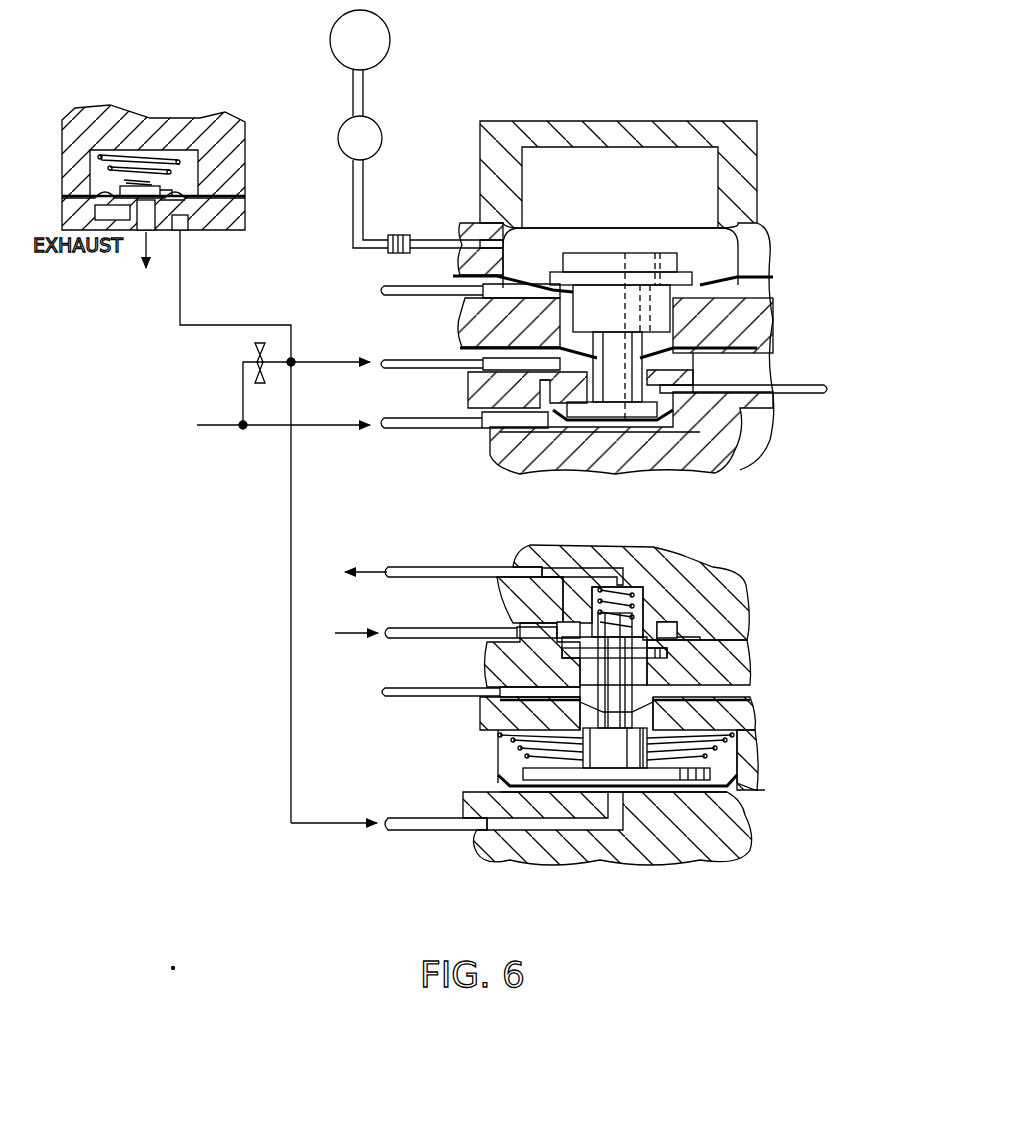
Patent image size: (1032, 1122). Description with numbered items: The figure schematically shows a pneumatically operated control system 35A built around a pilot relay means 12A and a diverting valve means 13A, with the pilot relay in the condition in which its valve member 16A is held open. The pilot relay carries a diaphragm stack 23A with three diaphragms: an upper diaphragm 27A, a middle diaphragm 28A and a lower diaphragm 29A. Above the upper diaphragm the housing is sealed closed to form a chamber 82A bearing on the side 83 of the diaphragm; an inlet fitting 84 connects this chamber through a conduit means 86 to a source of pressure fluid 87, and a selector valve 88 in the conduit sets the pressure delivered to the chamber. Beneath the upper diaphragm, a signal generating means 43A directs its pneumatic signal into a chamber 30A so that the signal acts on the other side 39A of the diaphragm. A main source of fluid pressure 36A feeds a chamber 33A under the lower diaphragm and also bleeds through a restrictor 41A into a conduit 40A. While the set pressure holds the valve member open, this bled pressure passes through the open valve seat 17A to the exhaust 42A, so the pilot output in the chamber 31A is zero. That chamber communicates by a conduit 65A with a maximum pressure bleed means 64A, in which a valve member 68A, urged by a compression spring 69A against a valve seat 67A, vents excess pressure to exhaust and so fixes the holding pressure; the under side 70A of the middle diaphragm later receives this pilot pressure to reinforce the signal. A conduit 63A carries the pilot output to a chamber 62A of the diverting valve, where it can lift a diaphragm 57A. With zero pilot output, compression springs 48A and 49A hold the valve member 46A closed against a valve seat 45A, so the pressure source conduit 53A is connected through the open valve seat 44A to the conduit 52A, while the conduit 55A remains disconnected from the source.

The pilot relay means 12A is at (615, 254).
The diverting valve means 13A is at (609, 667).
The valve member 16A is at (680, 455).
The valve seat 17A is at (690, 420).
The diaphragm stack 23A is at (690, 335).
The diaphragm 27A is at (700, 262).
The diaphragm 28A is at (520, 347).
The diaphragm 29A is at (680, 440).
The chamber 30A is at (725, 318).
The chamber 31A is at (475, 405).
The chamber 33A is at (510, 460).
The control system 35A is at (210, 40).
The main source of fluid pressure 36A is at (218, 428).
The other side of diaphragm 39A is at (478, 300).
The conduit 40A is at (388, 360).
The restrictor 41A is at (255, 352).
The exhaust 42A is at (805, 395).
The signal generating means 43A is at (385, 287).
The valve seat 44A is at (700, 628).
The valve seat 45A is at (660, 660).
The valve member 46A is at (680, 654).
The compression spring 48A is at (650, 598).
The compression spring 49A is at (735, 752).
The conduit 52A is at (448, 565).
The pressure source conduit 53A is at (430, 628).
The conduit 55A is at (440, 712).
The diaphragm 57A is at (750, 780).
The chamber 62A is at (745, 793).
The conduit 63A is at (430, 832).
The maximum pressure bleed means 64A is at (146, 106).
The conduit 65A is at (178, 298).
The valve seat 67A is at (178, 208).
The valve member 68A is at (205, 170).
The compression spring 69A is at (102, 168).
The under side of diaphragm 70A is at (720, 365).
The chamber 82A is at (640, 158).
The side of diaphragm 83 is at (540, 275).
The inlet fitting 84 is at (428, 240).
The conduit means 86 is at (398, 234).
The source of pressure fluid 87 is at (372, 34).
The selector valve 88 is at (370, 130).